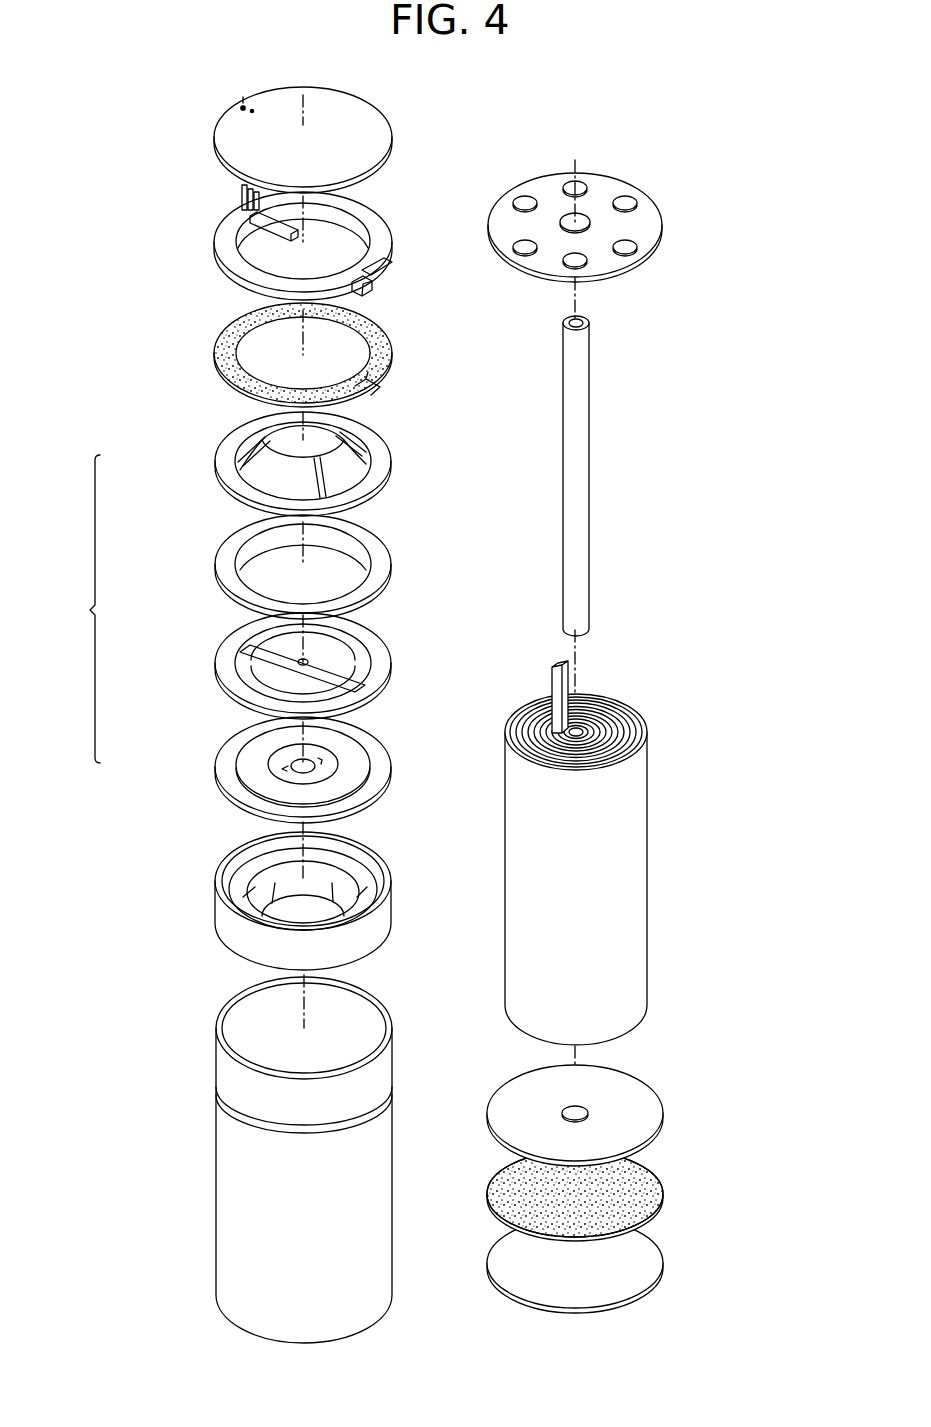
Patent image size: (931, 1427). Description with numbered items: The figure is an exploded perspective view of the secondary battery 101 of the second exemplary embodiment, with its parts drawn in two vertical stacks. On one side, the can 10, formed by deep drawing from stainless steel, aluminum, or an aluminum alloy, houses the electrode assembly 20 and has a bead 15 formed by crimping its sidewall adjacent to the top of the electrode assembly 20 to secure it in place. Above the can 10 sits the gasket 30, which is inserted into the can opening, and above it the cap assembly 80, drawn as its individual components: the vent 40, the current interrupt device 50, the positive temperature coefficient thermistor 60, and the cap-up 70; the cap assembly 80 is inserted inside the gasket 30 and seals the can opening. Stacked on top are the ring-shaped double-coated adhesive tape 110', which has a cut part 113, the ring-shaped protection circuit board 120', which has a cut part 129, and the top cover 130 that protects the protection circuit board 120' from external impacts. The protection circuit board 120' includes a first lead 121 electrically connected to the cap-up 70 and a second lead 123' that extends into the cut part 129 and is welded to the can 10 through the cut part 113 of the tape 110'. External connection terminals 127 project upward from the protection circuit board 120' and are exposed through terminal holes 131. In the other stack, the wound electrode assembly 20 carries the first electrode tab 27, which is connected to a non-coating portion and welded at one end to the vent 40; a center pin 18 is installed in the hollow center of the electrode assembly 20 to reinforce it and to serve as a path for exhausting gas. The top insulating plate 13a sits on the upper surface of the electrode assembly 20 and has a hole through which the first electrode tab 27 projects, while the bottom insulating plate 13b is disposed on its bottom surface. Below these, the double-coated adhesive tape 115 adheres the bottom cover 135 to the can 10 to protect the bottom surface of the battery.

The secondary battery 101 is at (694, 105).
The can 10 is at (230, 1202).
The bead 15 is at (227, 1102).
The electrode assembly 20 is at (620, 877).
The first electrode tab 27 is at (553, 672).
The gasket 30 is at (228, 912).
The vent 40 is at (228, 762).
The current interrupt device 50 is at (228, 660).
The positive temperature coefficient thermistor 60 is at (228, 566).
The cap-up 70 is at (228, 463).
The cap assembly 80 is at (78, 609).
The double-coated adhesive tape 110' is at (238, 355).
The cut part 113 is at (370, 383).
The protection circuit board 120' is at (238, 246).
The first lead 121 is at (258, 238).
The second lead 123' is at (404, 318).
The external connection terminals 127 is at (243, 197).
The cut part 129 is at (372, 281).
The top cover 130 is at (230, 138).
The terminal holes 131 is at (236, 111).
The top insulating plate 13a is at (652, 218).
The bottom insulating plate 13b is at (630, 1104).
The center pin 18 is at (590, 472).
The double-coated adhesive tape 115 is at (630, 1183).
The bottom cover 135 is at (628, 1258).